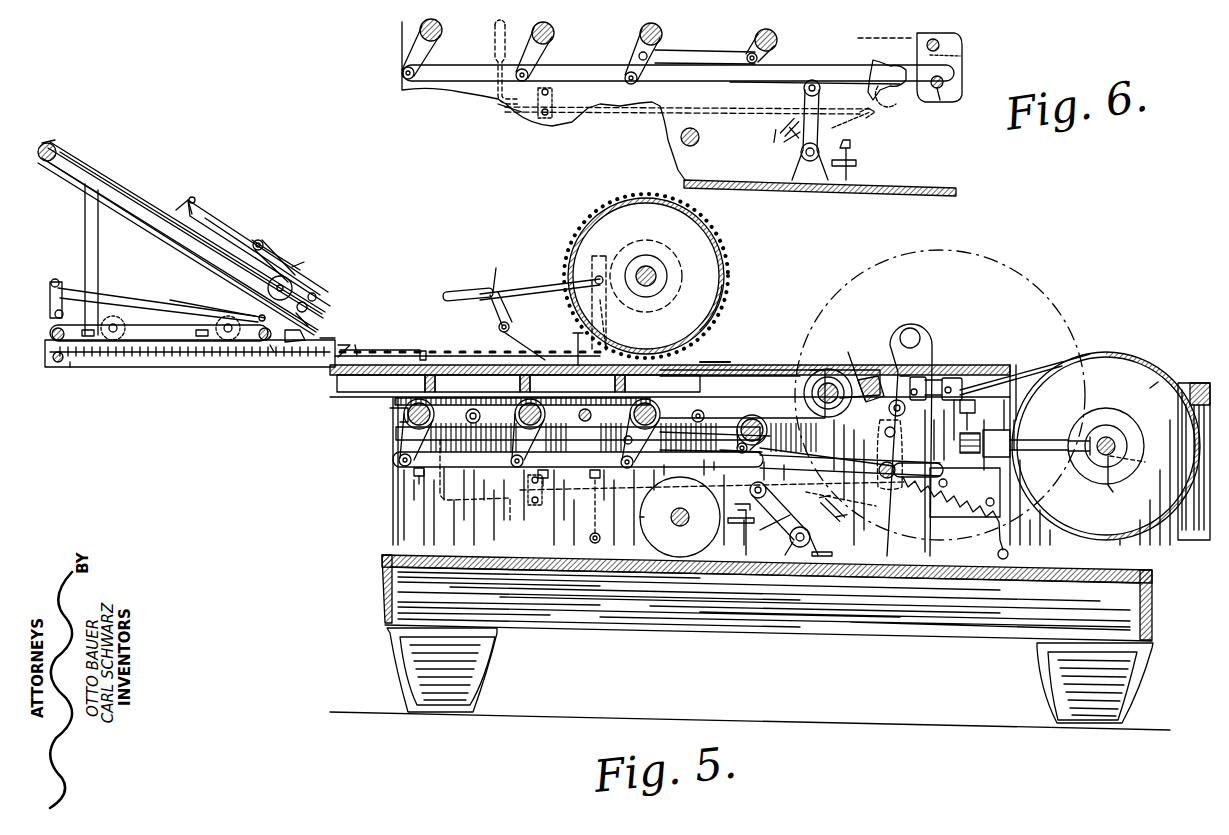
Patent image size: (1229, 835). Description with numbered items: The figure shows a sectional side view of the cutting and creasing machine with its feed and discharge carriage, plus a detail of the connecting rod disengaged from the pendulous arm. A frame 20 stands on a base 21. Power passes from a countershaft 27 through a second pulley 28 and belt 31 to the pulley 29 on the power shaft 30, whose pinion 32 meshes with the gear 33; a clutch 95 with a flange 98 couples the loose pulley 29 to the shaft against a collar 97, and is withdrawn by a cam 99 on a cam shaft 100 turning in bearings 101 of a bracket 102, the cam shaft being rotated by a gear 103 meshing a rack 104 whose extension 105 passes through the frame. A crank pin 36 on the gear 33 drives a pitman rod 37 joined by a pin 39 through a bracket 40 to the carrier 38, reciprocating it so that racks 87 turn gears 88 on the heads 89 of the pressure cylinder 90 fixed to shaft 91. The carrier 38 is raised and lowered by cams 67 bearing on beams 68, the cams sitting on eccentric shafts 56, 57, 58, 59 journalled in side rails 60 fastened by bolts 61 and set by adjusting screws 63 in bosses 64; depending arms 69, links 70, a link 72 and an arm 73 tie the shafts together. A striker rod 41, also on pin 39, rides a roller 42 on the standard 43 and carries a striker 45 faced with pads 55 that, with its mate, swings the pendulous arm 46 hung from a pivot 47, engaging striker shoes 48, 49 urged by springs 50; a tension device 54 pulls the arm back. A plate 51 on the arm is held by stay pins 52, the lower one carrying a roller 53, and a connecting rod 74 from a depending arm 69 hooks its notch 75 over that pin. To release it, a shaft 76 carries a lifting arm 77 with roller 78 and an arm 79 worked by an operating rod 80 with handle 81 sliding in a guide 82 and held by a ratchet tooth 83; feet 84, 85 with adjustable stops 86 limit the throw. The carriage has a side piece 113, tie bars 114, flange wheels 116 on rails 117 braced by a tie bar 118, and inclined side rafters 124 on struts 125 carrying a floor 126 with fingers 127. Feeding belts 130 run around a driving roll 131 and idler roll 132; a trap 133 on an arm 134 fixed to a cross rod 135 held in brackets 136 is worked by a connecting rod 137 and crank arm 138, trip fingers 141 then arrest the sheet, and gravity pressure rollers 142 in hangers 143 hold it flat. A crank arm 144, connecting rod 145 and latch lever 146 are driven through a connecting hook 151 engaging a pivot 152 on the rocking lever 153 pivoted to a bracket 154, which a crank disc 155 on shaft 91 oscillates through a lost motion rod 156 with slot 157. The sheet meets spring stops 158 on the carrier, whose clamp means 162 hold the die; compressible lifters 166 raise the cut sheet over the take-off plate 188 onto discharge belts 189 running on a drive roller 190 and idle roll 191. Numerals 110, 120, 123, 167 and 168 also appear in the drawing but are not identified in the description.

In FIG. 6, the frame 20 is at (668, 158).
In FIG. 5, the frame 20 is at (1150, 556).
In FIG. 6, the base 21 is at (785, 188).
In FIG. 5, the base 21 is at (1140, 610).
In FIG. 5, the pulley 27 is at (683, 500).
In FIG. 5, the pulley rim 28 is at (640, 517).
In FIG. 5, the flywheel 29 is at (1130, 358).
In FIG. 5, the shaft 30 is at (1116, 444).
In FIG. 5, the flywheel rim 31 is at (1152, 368).
In FIG. 5, the shaft key 32 is at (1139, 465).
In FIG. 5, the flywheel path circle 33 is at (1058, 300).
In FIG. 5, the pulley 36 is at (830, 370).
In FIG. 5, the bracket 37 is at (740, 375).
In FIG. 5, the table 38 is at (340, 400).
In FIG. 5, the guide 39 is at (712, 358).
In FIG. 5, the support 40 is at (672, 384).
In FIG. 5, the link 41 is at (862, 360).
In FIG. 5, the pivot 42 is at (903, 386).
In FIG. 5, the bracket 43 is at (912, 560).
In FIG. 5, the rod 45 is at (970, 385).
In FIG. 6, the lever 46 is at (992, 58).
In FIG. 5, the lever 46 is at (895, 330).
In FIG. 5, the pivot hole 47 is at (918, 336).
In FIG. 5, the pawl 48 is at (867, 389).
In FIG. 5, the plate 49 is at (930, 377).
In FIG. 5, the bracket 50 is at (888, 375).
In FIG. 6, the rod 51 is at (962, 78).
In FIG. 5, the rod 51 is at (865, 460).
In FIG. 6, the pin 52 is at (872, 52).
In FIG. 5, the pin 52 is at (894, 460).
In FIG. 6, the pin 53 is at (942, 88).
In FIG. 5, the spring 54 is at (968, 560).
In FIG. 5, the clamp 55 is at (745, 336).
In FIG. 6, the key lever 56 is at (418, 32).
In FIG. 5, the key lever 56 is at (404, 418).
In FIG. 6, the key lever 57 is at (556, 34).
In FIG. 5, the key lever 57 is at (515, 414).
In FIG. 6, the key lever 58 is at (640, 36).
In FIG. 5, the key lever 58 is at (630, 413).
In FIG. 6, the key lever 59 is at (755, 40).
In FIG. 5, the key lever 59 is at (738, 424).
In FIG. 5, the bracket 60 is at (392, 440).
In FIG. 5, the pivot 61 is at (466, 411).
In FIG. 5, the screw 63 is at (414, 476).
In FIG. 5, the screw 64 is at (432, 480).
In FIG. 5, the pivot 67 is at (390, 408).
In FIG. 5, the block 68 is at (335, 392).
In FIG. 6, the pivot pin 69 is at (400, 66).
In FIG. 5, the pivot pin 69 is at (398, 462).
In FIG. 6, the bar 70 is at (455, 82).
In FIG. 5, the bar 70 is at (516, 468).
In FIG. 6, the bar 72 is at (683, 50).
In FIG. 5, the bar 72 is at (672, 452).
In FIG. 6, the pivot 73 is at (760, 55).
In FIG. 5, the pivot 73 is at (735, 446).
In FIG. 6, the bar 74 is at (745, 82).
In FIG. 5, the bar 74 is at (928, 488).
In FIG. 6, the hook 75 is at (896, 104).
In FIG. 5, the hook 75 is at (895, 492).
In FIG. 6, the pivot 76 is at (812, 182).
In FIG. 5, the pivot 76 is at (800, 556).
In FIG. 6, the lever 77 is at (805, 98).
In FIG. 5, the lever 77 is at (770, 508).
In FIG. 6, the pivot 78 is at (822, 90).
In FIG. 5, the pivot 78 is at (750, 494).
In FIG. 6, the link 79 is at (858, 136).
In FIG. 5, the link 79 is at (812, 484).
In FIG. 6, the handle link 80 is at (503, 106).
In FIG. 5, the handle link 80 is at (460, 500).
In FIG. 6, the handle 81 is at (490, 44).
In FIG. 6, the slide 82 is at (540, 116).
In FIG. 5, the slide 82 is at (540, 506).
In FIG. 6, the rod 83 is at (568, 128).
In FIG. 5, the rod 83 is at (512, 508).
In FIG. 6, the screw 84 is at (792, 144).
In FIG. 5, the screw 84 is at (762, 556).
In FIG. 6, the screw 85 is at (858, 163).
In FIG. 5, the screw 85 is at (835, 556).
In FIG. 6, the screw 86 is at (776, 132).
In FIG. 5, the screw 86 is at (752, 532).
In FIG. 5, the guide 87 is at (405, 352).
In FIG. 5, the gear 88 is at (578, 226).
In FIG. 5, the gear teeth 89 is at (700, 254).
In FIG. 5, the gear rim 90 is at (730, 284).
In FIG. 5, the hub 91 is at (668, 282).
In FIG. 5, the flywheel face 95 is at (1152, 390).
In FIG. 5, the key 97 is at (1121, 480).
In FIG. 5, the hub 98 is at (1110, 420).
In FIG. 5, the collar 99 is at (1068, 440).
In FIG. 5, the shaft 100 is at (1048, 440).
In FIG. 5, the bearing 101 is at (1040, 452).
In FIG. 5, the housing 102 is at (1002, 510).
In FIG. 5, the screw 103 is at (978, 496).
In FIG. 5, the bearing block 104 is at (1010, 436).
In FIG. 5, the rod 105 is at (1010, 375).
In FIG. 5, the post 110 is at (576, 340).
In FIG. 5, the base bar 113 is at (158, 367).
In FIG. 5, the roller 114 is at (90, 338).
In FIG. 5, the roller 116 is at (118, 320).
In FIG. 5, the scale 117 is at (228, 360).
In FIG. 5, the pin 118 is at (58, 364).
In FIG. 5, the guide 120 is at (348, 346).
In FIG. 5, the pawl 123 is at (575, 356).
In FIG. 5, the table 124 is at (62, 148).
In FIG. 5, the post 125 is at (85, 238).
In FIG. 5, the rail 126 is at (95, 160).
In FIG. 5, the stop 127 is at (340, 338).
In FIG. 5, the plate 130 is at (140, 190).
In FIG. 5, the roller 131 is at (50, 143).
In FIG. 5, the bracket 132 is at (298, 344).
In FIG. 5, the bracket 133 is at (180, 204).
In FIG. 5, the plate 134 is at (210, 205).
In FIG. 5, the pivot 135 is at (264, 244).
In FIG. 5, the arm 136 is at (262, 240).
In FIG. 5, the plate 137 is at (228, 222).
In FIG. 5, the pin 138 is at (308, 305).
In FIG. 5, the link 141 is at (310, 314).
In FIG. 5, the roller 142 is at (292, 280).
In FIG. 5, the arm 143 is at (292, 262).
In FIG. 5, the pin 144 is at (318, 294).
In FIG. 5, the arm 145 is at (158, 292).
In FIG. 5, the bracket 146 is at (52, 283).
In FIG. 5, the link 151 is at (212, 300).
In FIG. 5, the lever 152 is at (496, 268).
In FIG. 5, the arm 153 is at (496, 310).
In FIG. 5, the pivot 154 is at (498, 328).
In FIG. 5, the disc 155 is at (648, 242).
In FIG. 5, the rod 156 is at (530, 288).
In FIG. 5, the handle 157 is at (465, 290).
In FIG. 5, the pawl 158 is at (612, 348).
In FIG. 5, the chain 162 is at (465, 356).
In FIG. 5, the block 166 is at (423, 350).
In FIG. 5, the stop 167 is at (332, 328).
In FIG. 5, the belt 168 is at (118, 186).
In FIG. 5, the plate 188 is at (300, 370).
In FIG. 5, the bar 189 is at (110, 322).
In FIG. 5, the pin 190 is at (72, 368).
In FIG. 5, the pin 191 is at (262, 362).